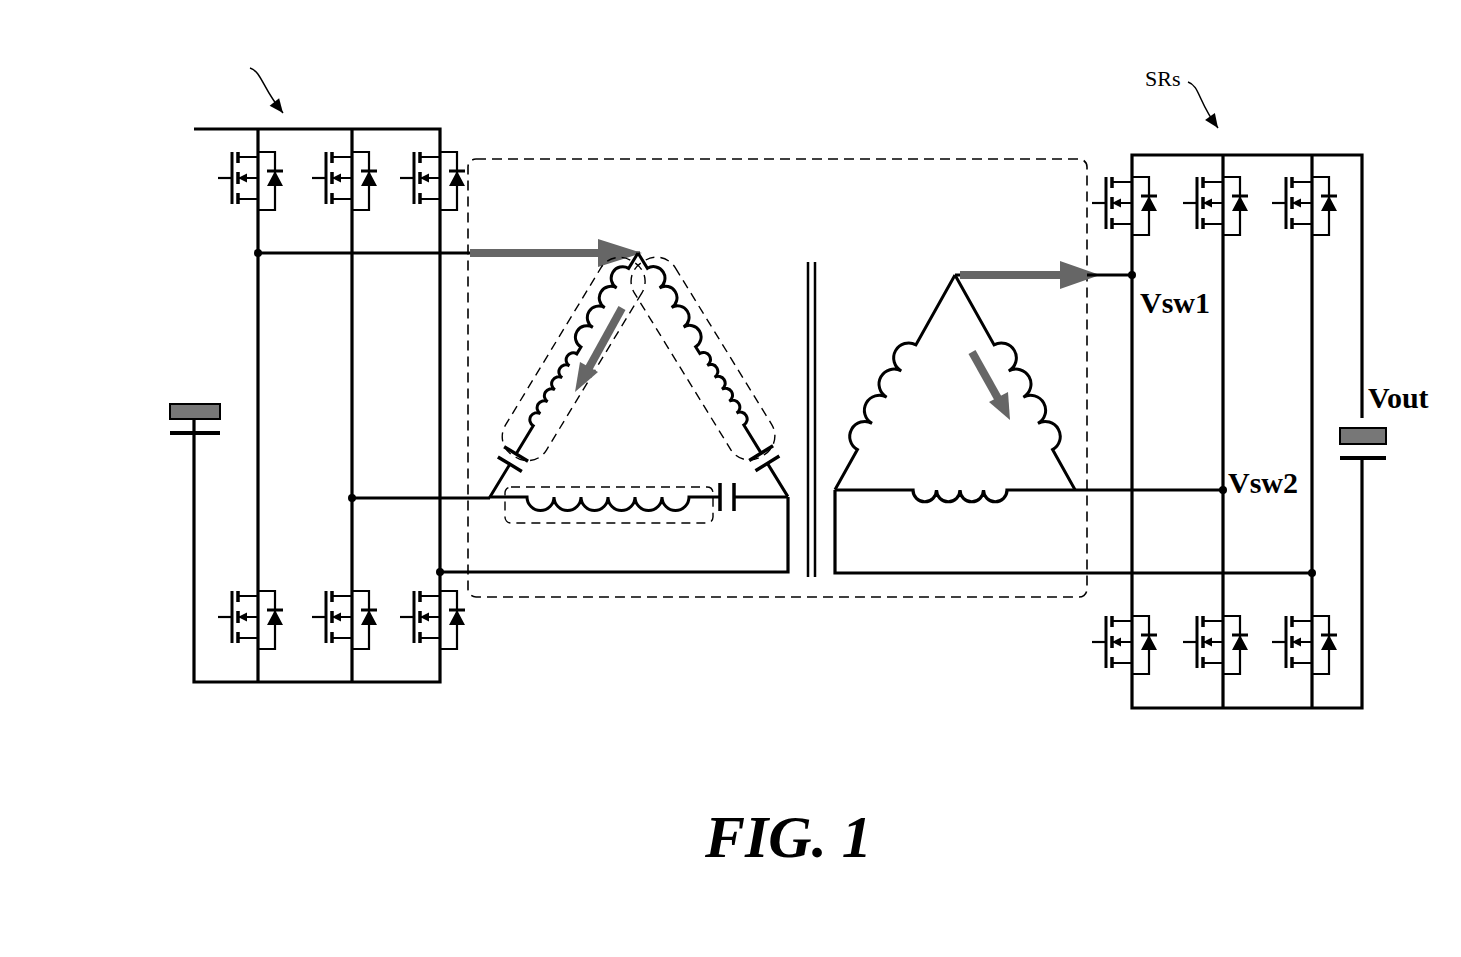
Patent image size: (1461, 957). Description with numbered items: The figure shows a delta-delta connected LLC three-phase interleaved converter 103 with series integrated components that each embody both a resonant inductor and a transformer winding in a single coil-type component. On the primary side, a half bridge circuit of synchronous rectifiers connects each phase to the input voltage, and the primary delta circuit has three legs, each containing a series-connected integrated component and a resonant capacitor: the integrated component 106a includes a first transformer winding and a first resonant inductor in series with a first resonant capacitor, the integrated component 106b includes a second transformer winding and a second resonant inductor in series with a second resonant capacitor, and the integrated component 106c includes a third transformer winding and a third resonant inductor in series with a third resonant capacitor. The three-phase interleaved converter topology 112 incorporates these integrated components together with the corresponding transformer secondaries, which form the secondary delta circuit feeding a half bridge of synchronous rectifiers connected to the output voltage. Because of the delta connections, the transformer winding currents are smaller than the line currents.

The three-phase interleaved converter 103 is at (415, 83).
The three-phase interleaved converter topology 112 is at (618, 158).
The integrated component 106a is at (590, 298).
The integrated component 106b is at (604, 487).
The integrated component 106c is at (660, 272).